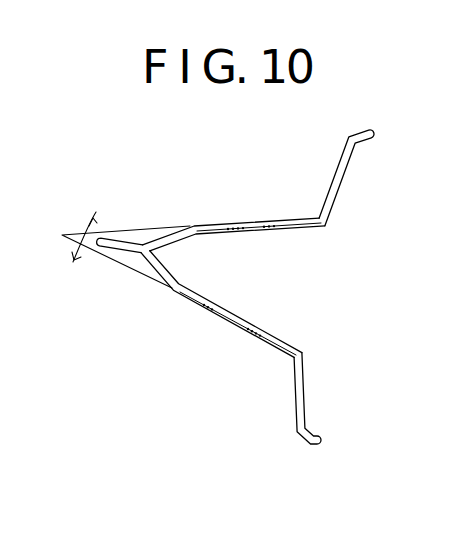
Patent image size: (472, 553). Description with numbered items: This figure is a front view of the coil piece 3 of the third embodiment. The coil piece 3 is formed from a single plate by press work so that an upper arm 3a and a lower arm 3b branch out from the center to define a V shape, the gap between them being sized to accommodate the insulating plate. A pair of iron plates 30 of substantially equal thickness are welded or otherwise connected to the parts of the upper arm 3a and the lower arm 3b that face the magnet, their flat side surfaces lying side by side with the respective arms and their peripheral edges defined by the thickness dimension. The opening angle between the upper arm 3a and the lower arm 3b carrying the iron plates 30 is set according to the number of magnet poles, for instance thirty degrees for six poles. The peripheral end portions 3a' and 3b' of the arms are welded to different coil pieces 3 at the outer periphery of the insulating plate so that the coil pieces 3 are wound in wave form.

The coil piece 3 is at (132, 240).
The upper arm 3a is at (234, 211).
The peripheral end portion of the upper arm 3a' is at (380, 171).
The lower arm 3b is at (221, 304).
The peripheral end portion of the lower arm 3b' is at (271, 409).
The iron plates 30 is at (238, 233).